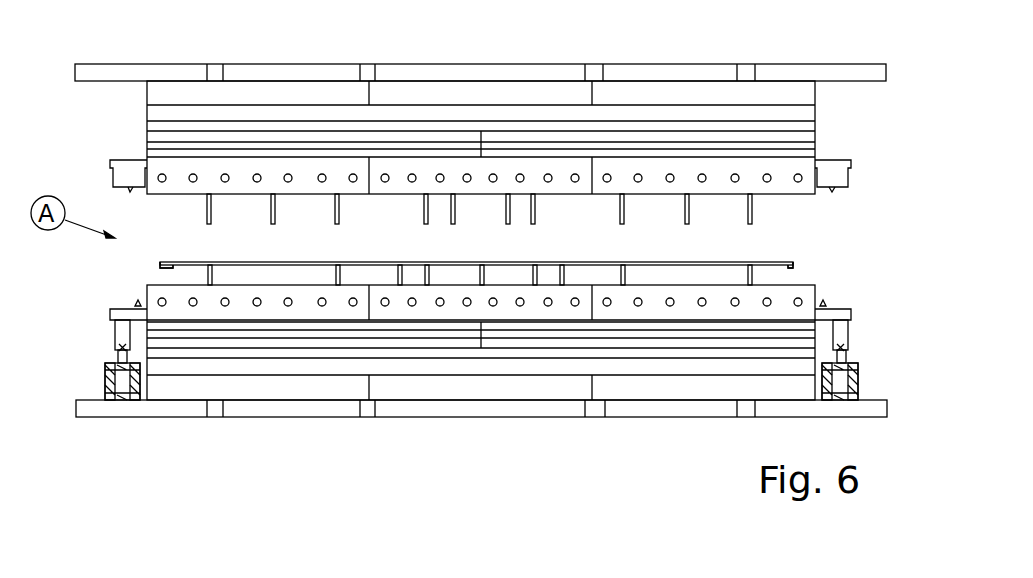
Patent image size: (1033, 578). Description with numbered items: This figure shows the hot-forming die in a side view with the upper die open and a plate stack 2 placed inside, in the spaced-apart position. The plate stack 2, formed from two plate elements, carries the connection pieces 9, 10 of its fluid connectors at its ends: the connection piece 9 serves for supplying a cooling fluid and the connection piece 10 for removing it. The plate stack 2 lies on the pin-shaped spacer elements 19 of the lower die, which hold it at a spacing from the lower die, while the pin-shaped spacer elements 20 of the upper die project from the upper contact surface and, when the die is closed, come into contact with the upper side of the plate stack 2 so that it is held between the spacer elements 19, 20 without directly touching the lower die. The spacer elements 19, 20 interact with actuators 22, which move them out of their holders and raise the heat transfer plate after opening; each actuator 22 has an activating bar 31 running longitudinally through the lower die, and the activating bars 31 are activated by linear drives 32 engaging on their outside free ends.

The plate stack 2 is at (278, 264).
The connection piece 9 is at (172, 268).
The connection piece 10 is at (793, 268).
The spacer elements 19 is at (338, 283).
The spacer elements 20 is at (752, 211).
The actuators 22 is at (104, 351).
The activating bar 31 is at (850, 318).
The linear drives 32 is at (842, 357).